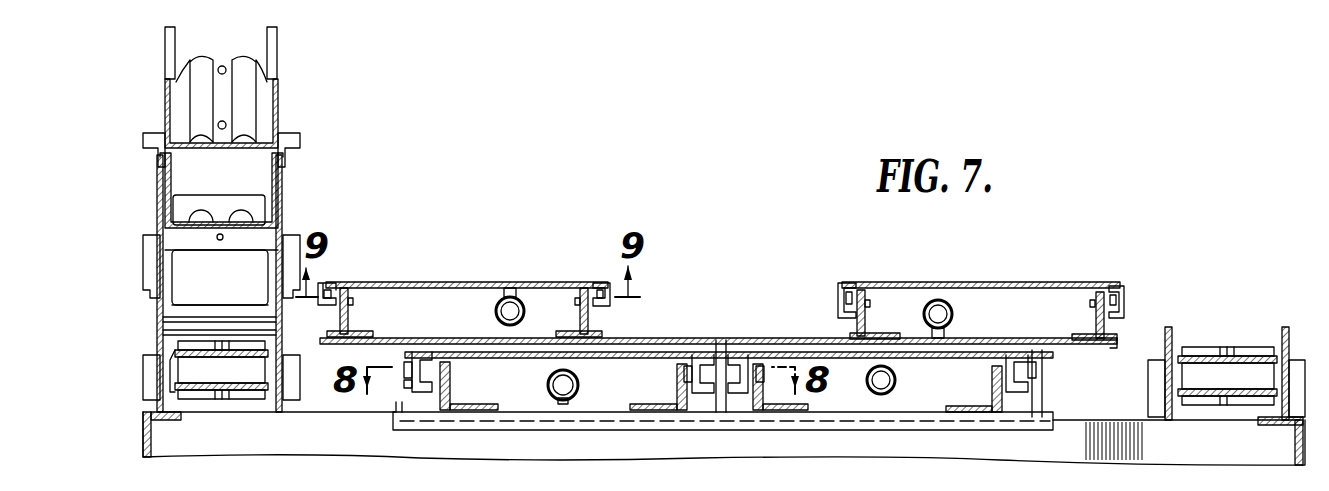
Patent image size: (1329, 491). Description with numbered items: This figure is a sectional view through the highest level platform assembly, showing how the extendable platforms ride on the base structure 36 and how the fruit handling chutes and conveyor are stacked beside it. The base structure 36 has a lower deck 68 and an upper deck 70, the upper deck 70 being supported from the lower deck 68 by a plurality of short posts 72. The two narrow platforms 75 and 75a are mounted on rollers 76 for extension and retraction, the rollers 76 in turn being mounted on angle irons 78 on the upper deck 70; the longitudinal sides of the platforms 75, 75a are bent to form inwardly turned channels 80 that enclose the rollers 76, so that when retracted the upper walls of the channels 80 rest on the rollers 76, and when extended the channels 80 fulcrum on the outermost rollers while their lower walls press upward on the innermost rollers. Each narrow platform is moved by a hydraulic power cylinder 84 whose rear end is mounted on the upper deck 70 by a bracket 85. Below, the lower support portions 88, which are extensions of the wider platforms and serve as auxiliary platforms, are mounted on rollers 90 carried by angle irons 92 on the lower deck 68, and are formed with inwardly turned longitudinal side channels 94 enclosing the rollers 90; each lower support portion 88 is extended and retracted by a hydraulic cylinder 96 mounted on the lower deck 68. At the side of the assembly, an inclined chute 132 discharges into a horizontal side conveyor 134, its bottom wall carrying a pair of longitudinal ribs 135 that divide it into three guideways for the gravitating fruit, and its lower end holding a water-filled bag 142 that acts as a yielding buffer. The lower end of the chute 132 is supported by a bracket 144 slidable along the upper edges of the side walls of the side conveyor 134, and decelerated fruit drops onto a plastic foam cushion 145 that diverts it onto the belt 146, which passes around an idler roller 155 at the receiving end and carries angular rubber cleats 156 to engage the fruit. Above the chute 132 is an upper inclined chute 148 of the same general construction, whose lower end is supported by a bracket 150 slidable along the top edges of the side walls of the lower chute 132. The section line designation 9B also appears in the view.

The base structure 36 is at (868, 464).
The lower deck 68 is at (646, 430).
The upper deck 70 is at (674, 338).
The short posts 72 is at (400, 402).
The narrow platform 75 is at (1020, 283).
The narrow platform 75a is at (415, 284).
The rollers 76 is at (330, 285).
The angle irons 78 is at (580, 320).
The inwardly turned channels 80 is at (612, 300).
The hydraulic power cylinder 84 is at (497, 310).
The bracket 85 is at (950, 322).
The lower support portions 88 is at (594, 359).
The rollers 90 is at (420, 355).
The angle irons 92 is at (452, 402).
The longitudinal side channels 94 is at (407, 352).
The hydraulic cylinder 96 is at (549, 383).
The inclined chute 132 is at (285, 180).
The side conveyor 134 is at (158, 327).
The longitudinal ribs 135 is at (200, 93).
The bag 142 is at (190, 263).
The bracket 144 is at (286, 242).
The plastic foam cushion 145 is at (172, 310).
The belt 146 is at (182, 356).
The inclined chute 148 is at (163, 79).
The bracket 150 is at (143, 150).
The idler roller 155 is at (234, 412).
The angular rubber cleats 156 is at (176, 343).
The section reference 9B is at (464, 485).